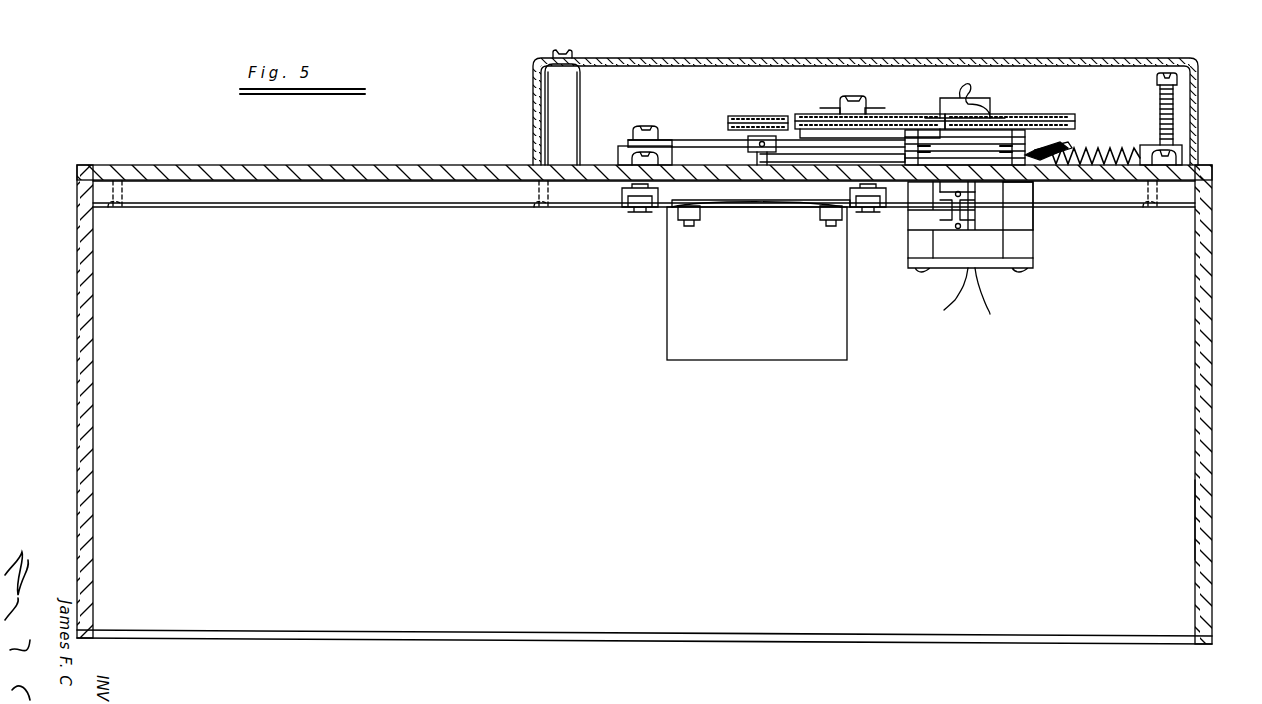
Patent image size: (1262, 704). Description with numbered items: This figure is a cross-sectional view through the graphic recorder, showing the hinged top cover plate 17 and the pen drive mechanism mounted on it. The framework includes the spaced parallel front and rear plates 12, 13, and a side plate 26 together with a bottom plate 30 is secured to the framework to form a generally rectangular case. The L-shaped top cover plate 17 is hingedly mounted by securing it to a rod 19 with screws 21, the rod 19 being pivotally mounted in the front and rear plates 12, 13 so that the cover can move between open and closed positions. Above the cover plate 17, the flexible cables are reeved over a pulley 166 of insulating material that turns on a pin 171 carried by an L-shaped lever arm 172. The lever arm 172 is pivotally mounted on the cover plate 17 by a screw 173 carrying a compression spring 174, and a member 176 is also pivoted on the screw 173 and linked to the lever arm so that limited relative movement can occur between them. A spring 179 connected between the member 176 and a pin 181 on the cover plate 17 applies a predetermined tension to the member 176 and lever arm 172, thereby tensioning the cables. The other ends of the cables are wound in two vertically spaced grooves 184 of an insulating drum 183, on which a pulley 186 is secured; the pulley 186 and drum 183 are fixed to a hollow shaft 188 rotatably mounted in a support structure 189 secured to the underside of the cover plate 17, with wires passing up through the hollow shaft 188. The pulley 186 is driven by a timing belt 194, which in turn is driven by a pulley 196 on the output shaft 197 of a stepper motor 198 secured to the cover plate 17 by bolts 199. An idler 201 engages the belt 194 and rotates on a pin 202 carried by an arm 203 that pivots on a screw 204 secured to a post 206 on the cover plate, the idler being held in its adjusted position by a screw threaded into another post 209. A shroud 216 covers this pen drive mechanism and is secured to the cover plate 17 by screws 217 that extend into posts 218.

The front plate 12 is at (77, 376).
The rear plate 13 is at (1195, 518).
The top cover plate 17 is at (470, 166).
The rod 19 is at (394, 200).
The screws 21 is at (1136, 222).
The side plate 26 is at (697, 481).
The bottom plate 30 is at (532, 642).
The pulley 166 is at (1080, 142).
The pin 171 is at (1050, 142).
The L-shaped lever arm 172 is at (1114, 152).
The screw 173 is at (1157, 78).
The compression spring 174 is at (1160, 102).
The member 176 is at (1160, 150).
The spring 179 is at (1112, 182).
The pin 181 is at (1018, 190).
The drum 183 is at (1012, 118).
The grooves 184 is at (908, 140).
The pulley 186 is at (897, 128).
The hollow shaft 188 is at (958, 205).
The support structure 189 is at (946, 255).
The belt 194 is at (790, 118).
The pulley 196 is at (760, 116).
The output shaft 197 is at (755, 157).
The stepper motor 198 is at (764, 293).
The bolts 199 is at (640, 210).
The idler 201 is at (850, 114).
The pin 202 is at (850, 98).
The arm 203 is at (820, 152).
The screw 204 is at (650, 128).
The post 206 is at (624, 156).
The post 209 is at (838, 185).
The shroud 216 is at (664, 58).
The screws 217 is at (563, 52).
The posts 218 is at (584, 92).